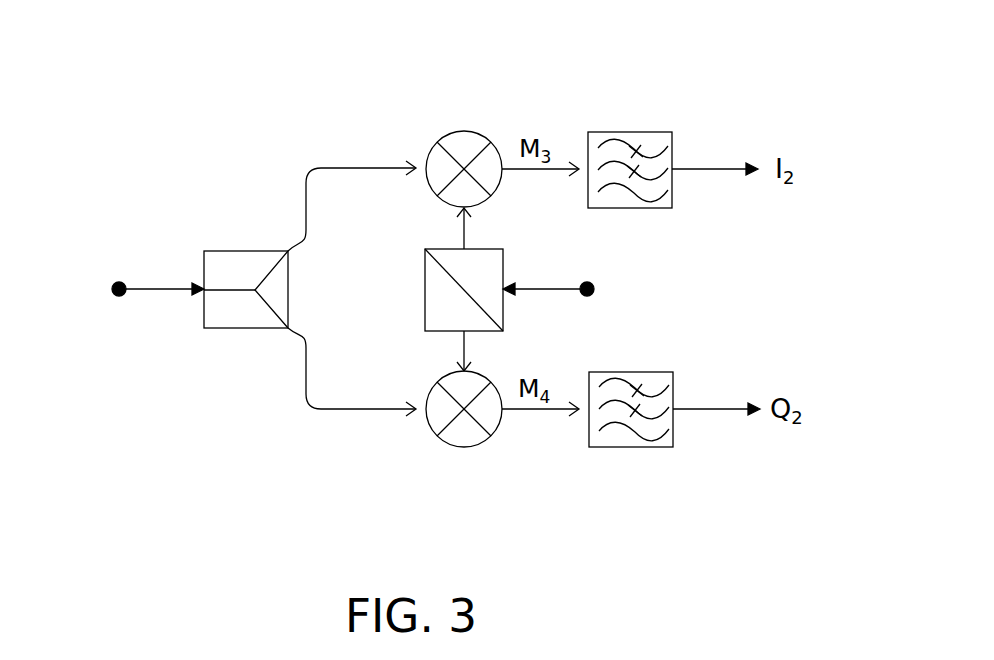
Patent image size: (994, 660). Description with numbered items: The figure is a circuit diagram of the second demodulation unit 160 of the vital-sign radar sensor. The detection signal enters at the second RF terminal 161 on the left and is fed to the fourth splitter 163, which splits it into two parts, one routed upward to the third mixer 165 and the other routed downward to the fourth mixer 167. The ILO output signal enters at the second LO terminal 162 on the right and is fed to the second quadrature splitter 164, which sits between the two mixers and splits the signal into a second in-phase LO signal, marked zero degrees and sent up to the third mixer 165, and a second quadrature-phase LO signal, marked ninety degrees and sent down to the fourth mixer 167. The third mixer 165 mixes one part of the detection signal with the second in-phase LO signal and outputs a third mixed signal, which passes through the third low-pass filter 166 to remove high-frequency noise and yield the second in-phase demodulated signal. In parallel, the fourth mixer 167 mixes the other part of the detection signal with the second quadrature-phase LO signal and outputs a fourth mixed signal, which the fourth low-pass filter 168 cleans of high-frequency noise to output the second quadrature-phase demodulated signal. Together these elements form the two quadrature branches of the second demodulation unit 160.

The second demodulation unit 160 is at (128, 129).
The second RF terminal 161 is at (119, 281).
The second LO terminal 162 is at (581, 287).
The fourth splitter 163 is at (246, 251).
The second quadrature splitter 164 is at (425, 290).
The third mixer 165 is at (464, 131).
The third low-pass filter 166 is at (631, 132).
The fourth mixer 167 is at (464, 448).
The fourth low-pass filter 168 is at (632, 447).